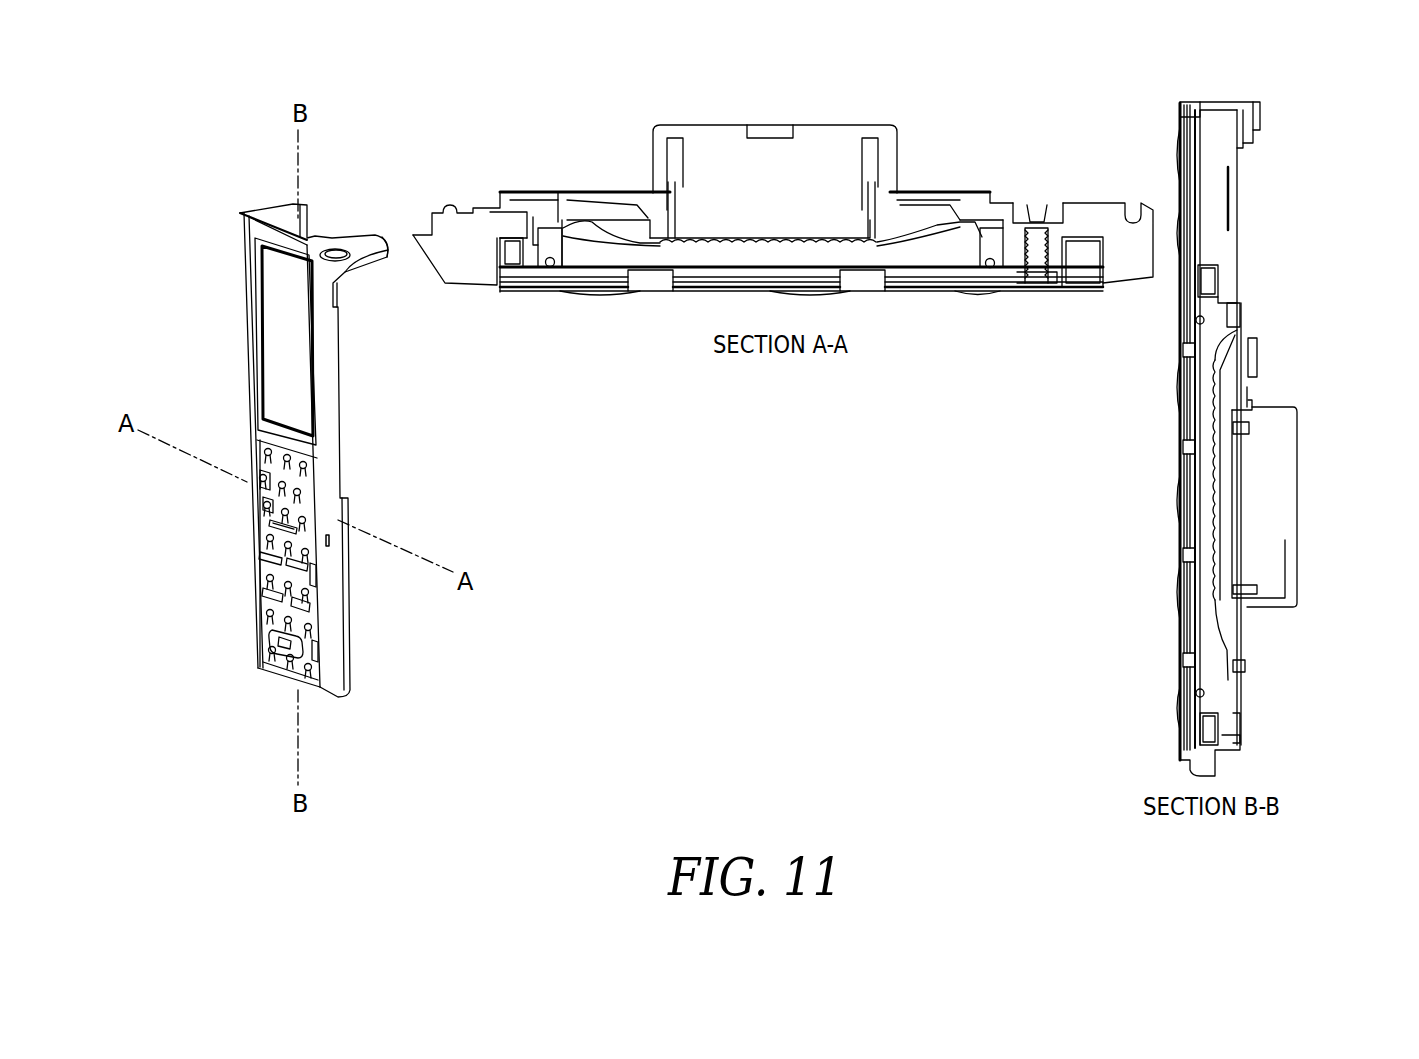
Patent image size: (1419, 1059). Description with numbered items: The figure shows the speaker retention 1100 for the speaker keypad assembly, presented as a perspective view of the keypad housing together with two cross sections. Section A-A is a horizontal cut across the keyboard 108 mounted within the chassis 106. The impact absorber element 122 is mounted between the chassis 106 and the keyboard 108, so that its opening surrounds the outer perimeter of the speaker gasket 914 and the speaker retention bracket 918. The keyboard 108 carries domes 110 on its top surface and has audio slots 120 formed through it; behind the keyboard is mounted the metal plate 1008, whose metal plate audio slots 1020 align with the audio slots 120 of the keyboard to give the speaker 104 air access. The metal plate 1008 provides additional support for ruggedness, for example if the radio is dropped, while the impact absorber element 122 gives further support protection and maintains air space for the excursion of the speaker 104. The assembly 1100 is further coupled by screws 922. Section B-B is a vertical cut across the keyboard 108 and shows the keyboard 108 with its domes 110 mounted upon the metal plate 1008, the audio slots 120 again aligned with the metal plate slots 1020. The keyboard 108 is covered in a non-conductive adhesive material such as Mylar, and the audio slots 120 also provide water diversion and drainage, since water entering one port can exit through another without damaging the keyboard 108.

The speaker 104 is at (860, 125).
The chassis 106 is at (335, 697).
The keyboard 108 is at (685, 275).
The domes 110 is at (803, 295).
The audio slots 120 is at (270, 524).
The impact absorber element 122 is at (510, 250).
The speaker gasket 914 is at (547, 238).
The speaker retention bracket 918 is at (552, 268).
The screws 922 is at (1047, 203).
The metal plate 1008 is at (658, 290).
The metal plate audio slots 1020 is at (630, 275).
The speaker retention 1100 is at (1396, 822).